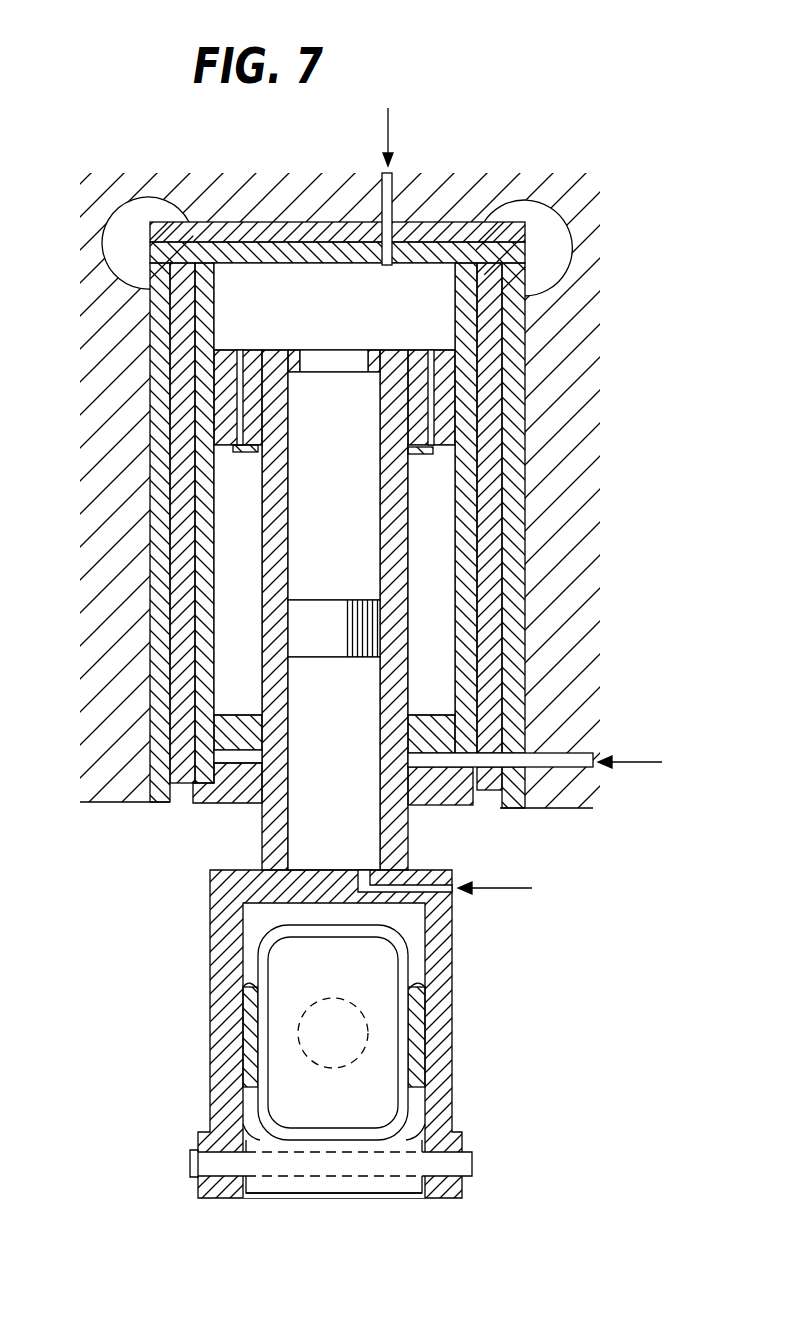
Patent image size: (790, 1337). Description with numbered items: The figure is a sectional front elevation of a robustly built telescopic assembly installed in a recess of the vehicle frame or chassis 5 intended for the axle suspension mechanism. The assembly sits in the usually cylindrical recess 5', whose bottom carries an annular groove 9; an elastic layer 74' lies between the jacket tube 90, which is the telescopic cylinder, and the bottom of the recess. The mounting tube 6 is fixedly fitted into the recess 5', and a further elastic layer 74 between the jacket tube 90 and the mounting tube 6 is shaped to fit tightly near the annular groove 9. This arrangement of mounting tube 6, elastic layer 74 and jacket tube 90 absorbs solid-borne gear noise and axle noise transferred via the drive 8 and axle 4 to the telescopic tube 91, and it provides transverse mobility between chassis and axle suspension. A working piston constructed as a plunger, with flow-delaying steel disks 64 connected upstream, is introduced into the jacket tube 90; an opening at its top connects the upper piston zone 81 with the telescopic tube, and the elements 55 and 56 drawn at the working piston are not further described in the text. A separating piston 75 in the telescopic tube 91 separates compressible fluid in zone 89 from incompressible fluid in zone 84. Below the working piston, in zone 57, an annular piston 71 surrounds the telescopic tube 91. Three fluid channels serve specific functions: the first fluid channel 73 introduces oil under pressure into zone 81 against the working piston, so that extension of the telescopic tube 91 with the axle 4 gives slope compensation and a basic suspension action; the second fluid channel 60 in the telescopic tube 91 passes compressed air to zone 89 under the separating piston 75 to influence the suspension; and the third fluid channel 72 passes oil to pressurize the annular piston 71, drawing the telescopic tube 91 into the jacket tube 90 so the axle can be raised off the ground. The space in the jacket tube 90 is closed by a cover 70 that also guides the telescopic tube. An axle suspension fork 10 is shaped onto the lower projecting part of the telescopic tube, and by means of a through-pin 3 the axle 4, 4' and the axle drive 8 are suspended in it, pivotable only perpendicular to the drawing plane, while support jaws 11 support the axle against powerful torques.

The vehicle frame or chassis 5 is at (340, 449).
The cylindrical recess 5' is at (507, 812).
The annular groove 9 is at (106, 240).
The elastic layer 74' is at (337, 183).
The elastic layer 74 is at (117, 523).
The mounting tube 6 is at (150, 388).
The jacket tube 90 is at (216, 297).
The first fluid channel 73 is at (383, 192).
The upper piston zone 81 is at (382, 324).
The piston head 55 is at (322, 340).
The right control rod 56 is at (432, 348).
The flow-delaying steel disks 64 is at (243, 456).
The incompressible fluid zone 84 is at (347, 522).
The separating piston 75 is at (333, 650).
The compressible fluid zone 89 is at (347, 732).
The zone below working piston 57 is at (441, 559).
The telescopic tube 91 is at (398, 696).
The annular piston 71 is at (232, 718).
The cover 70 is at (236, 803).
The third fluid channel 72 is at (594, 770).
The second fluid channel 60 is at (448, 895).
The axle suspension fork 10 is at (213, 940).
The support jaws 11 is at (243, 1046).
The axle drive 8 is at (333, 1005).
The through-pin 3 is at (190, 1154).
The axle 4 is at (334, 1179).
The axle 4' is at (334, 1226).